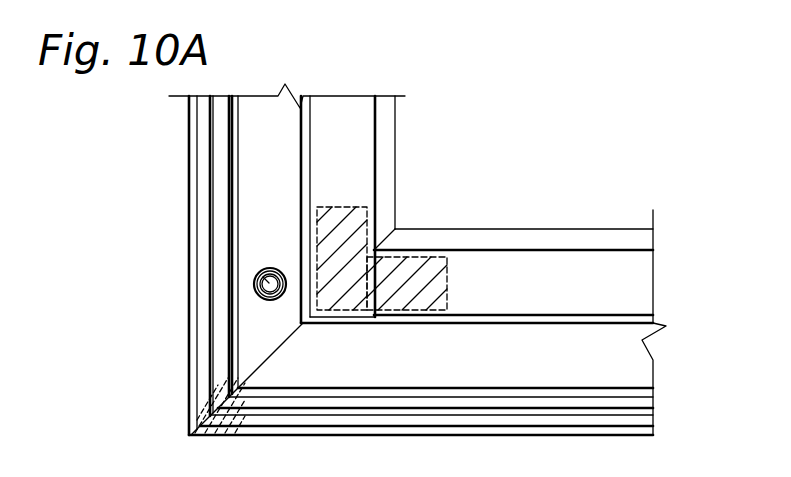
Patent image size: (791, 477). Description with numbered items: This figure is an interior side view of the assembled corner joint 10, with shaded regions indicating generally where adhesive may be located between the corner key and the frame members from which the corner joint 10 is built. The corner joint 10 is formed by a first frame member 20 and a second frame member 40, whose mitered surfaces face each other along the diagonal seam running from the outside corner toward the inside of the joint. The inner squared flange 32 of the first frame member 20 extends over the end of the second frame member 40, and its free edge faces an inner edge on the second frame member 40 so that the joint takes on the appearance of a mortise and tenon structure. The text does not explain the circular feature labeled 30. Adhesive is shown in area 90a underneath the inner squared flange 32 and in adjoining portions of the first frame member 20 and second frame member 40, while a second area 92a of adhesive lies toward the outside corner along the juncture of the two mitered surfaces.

The corner joint 10 is at (615, 130).
The first frame member 20 is at (188, 213).
The fastener / pivot 30 is at (256, 272).
The inner squared flange 32 is at (345, 313).
The second frame member 40 is at (448, 435).
The area 90a is at (347, 207).
The second area 92a is at (238, 420).